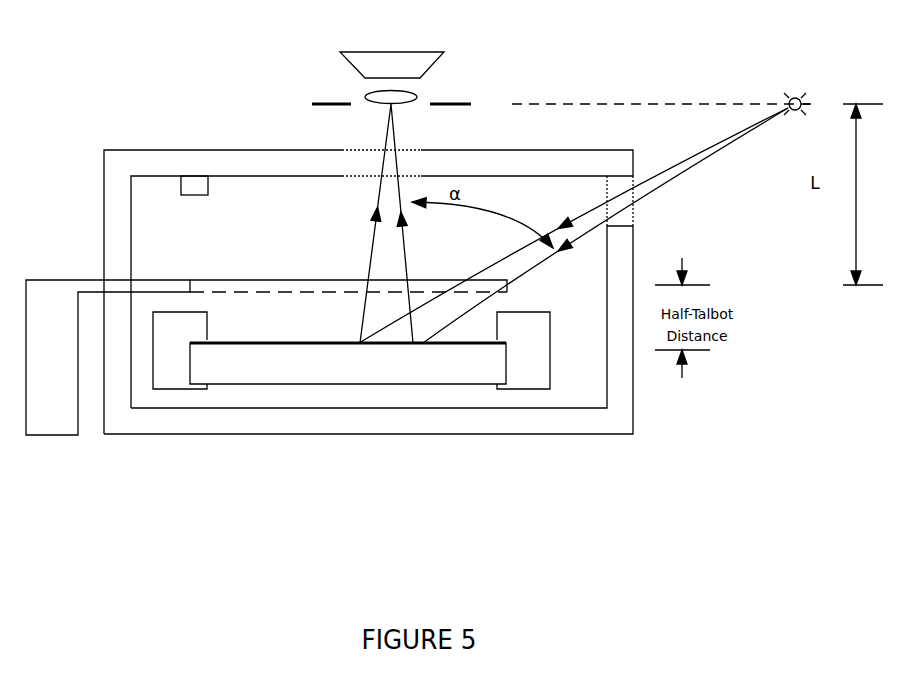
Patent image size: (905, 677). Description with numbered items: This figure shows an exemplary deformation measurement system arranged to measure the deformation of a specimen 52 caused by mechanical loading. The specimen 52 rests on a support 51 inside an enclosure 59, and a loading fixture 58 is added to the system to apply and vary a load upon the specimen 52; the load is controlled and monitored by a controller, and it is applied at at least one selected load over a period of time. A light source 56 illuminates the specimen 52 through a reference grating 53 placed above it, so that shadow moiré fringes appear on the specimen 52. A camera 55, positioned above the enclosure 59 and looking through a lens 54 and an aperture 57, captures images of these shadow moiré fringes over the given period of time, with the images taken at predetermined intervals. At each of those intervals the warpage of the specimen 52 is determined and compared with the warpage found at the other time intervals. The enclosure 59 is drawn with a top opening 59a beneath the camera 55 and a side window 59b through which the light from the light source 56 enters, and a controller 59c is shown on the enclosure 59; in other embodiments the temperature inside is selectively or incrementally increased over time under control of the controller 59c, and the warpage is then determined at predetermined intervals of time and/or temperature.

The support 51 is at (52, 435).
The specimen 52 is at (440, 388).
The reference grating 53 is at (190, 283).
The lens 54 is at (364, 96).
The camera 55 is at (348, 62).
The light source 56 is at (788, 103).
The aperture 57 is at (449, 103).
The loading fixture 58 is at (180, 389).
The enclosure 59 is at (183, 150).
The enclosure top opening 59a is at (355, 163).
The enclosure side window 59b is at (620, 200).
The controller 59c is at (181, 183).